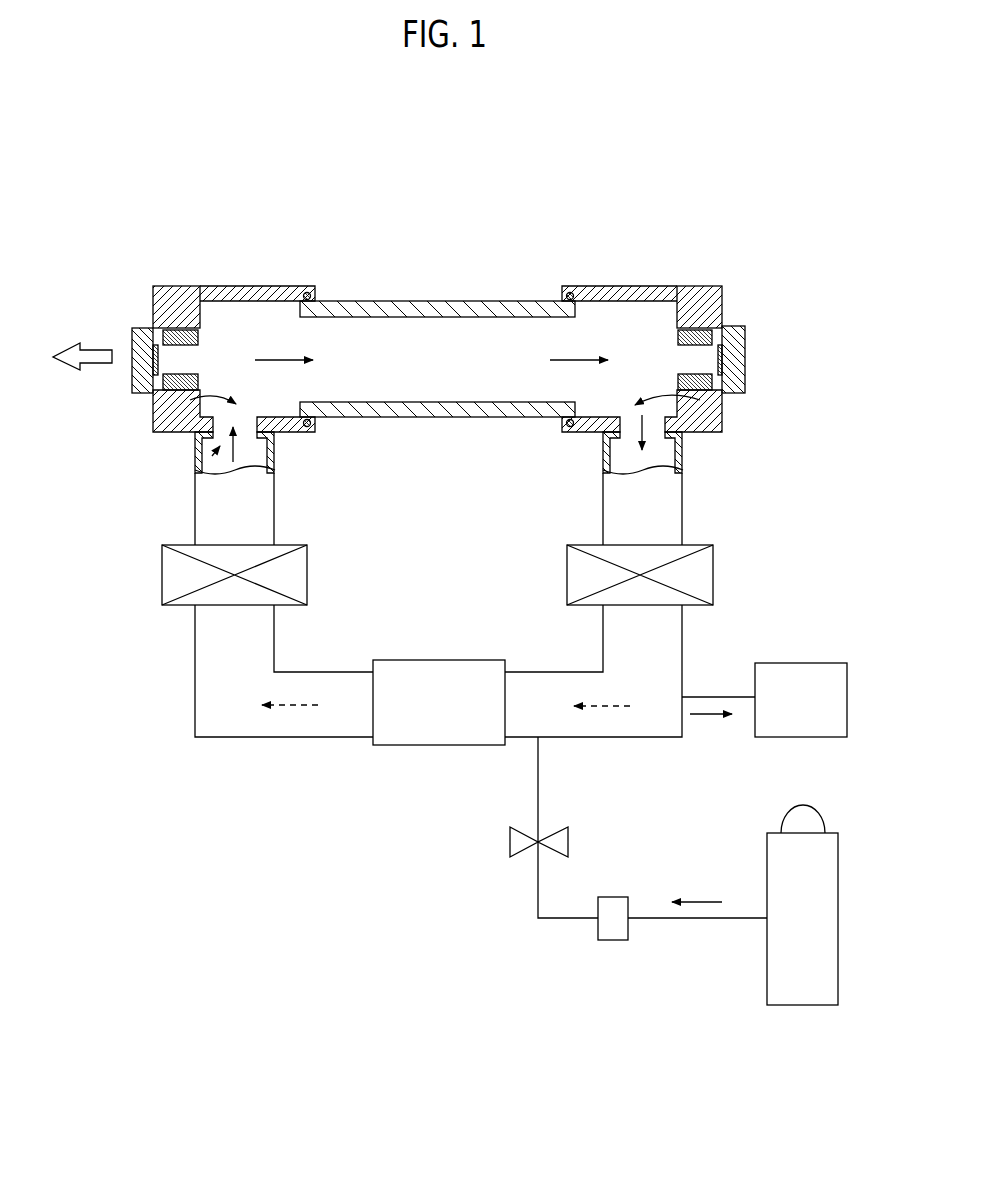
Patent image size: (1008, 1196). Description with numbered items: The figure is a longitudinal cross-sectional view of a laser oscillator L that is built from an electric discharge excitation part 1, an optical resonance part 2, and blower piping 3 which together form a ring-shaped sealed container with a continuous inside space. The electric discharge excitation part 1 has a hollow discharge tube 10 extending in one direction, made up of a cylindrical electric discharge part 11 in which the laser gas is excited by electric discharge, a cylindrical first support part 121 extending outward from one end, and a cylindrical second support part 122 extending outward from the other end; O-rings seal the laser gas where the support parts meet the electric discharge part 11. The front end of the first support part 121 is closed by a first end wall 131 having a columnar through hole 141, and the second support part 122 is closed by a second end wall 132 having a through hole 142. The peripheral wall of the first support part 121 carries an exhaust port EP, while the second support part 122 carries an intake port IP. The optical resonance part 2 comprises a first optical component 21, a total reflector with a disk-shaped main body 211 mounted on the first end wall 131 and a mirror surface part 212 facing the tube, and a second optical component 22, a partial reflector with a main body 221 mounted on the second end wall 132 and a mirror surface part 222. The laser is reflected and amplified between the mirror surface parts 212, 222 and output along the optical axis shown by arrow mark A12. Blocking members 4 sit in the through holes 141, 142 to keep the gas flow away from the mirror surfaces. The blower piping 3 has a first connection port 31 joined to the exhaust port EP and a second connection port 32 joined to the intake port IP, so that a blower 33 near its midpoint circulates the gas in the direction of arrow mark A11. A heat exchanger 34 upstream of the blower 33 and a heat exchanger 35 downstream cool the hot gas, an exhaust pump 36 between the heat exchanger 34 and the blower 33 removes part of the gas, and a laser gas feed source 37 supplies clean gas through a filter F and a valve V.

The laser oscillator L is at (124, 169).
The electric discharge excitation part 1 is at (150, 286).
The second end wall 132 is at (166, 287).
The second support part 122 is at (260, 296).
The through hole 142 is at (207, 331).
The blocking member 4 is at (198, 344).
The mirror surface part 222 is at (155, 350).
The main body 221 is at (143, 362).
The second optical component 22 is at (129, 378).
The arrow mark A12 is at (84, 345).
The intake port IP is at (198, 405).
The second connection port 32 is at (199, 455).
The arrow mark A11 is at (276, 362).
The discharge tube 10 is at (420, 297).
The electric discharge part 11 is at (497, 300).
The optical resonance part 2 is at (730, 316).
The first end wall 131 is at (697, 286).
The first support part 121 is at (633, 287).
The through hole 141 is at (678, 333).
The exhaust port EP is at (700, 400).
The first optical component 21 is at (752, 365).
The main body 211 is at (738, 360).
The mirror surface part 212 is at (723, 352).
The first connection port 31 is at (662, 446).
The blower piping 3 is at (350, 762).
The heat exchanger 35 is at (163, 570).
The heat exchanger 34 is at (713, 570).
The blower 33 is at (430, 746).
The exhaust pump 36 is at (808, 663).
The valve V is at (568, 840).
The filter F is at (613, 940).
The laser gas feed source 37 is at (767, 850).